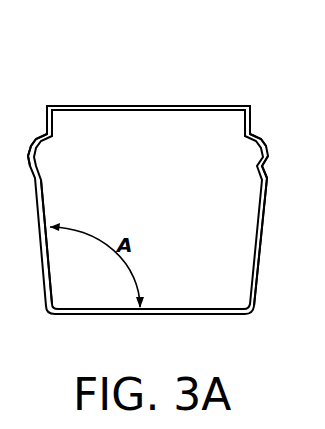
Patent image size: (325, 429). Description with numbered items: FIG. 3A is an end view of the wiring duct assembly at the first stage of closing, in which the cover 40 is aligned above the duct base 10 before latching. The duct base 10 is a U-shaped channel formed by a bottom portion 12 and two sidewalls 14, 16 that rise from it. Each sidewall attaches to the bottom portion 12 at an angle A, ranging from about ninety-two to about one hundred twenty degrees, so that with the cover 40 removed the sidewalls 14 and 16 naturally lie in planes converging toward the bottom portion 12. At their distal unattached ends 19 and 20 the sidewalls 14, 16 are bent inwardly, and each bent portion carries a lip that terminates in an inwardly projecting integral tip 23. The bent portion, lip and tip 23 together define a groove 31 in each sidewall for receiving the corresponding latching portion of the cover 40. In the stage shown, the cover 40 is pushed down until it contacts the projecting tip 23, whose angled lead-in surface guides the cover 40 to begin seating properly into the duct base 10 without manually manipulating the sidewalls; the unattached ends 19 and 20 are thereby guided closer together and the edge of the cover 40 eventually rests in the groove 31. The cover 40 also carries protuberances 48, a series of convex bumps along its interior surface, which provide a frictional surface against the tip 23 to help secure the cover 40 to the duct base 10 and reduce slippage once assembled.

The duct base 10 is at (260, 245).
The bottom portion 12 is at (192, 320).
The sidewall 14 is at (255, 292).
The sidewall 16 is at (51, 283).
The distal unattached end 19 is at (242, 137).
The distal unattached end 20 is at (52, 138).
The projecting tip 23 is at (252, 140).
The groove 31 is at (272, 178).
The cover 40 is at (92, 106).
The protuberances 48 is at (248, 106).